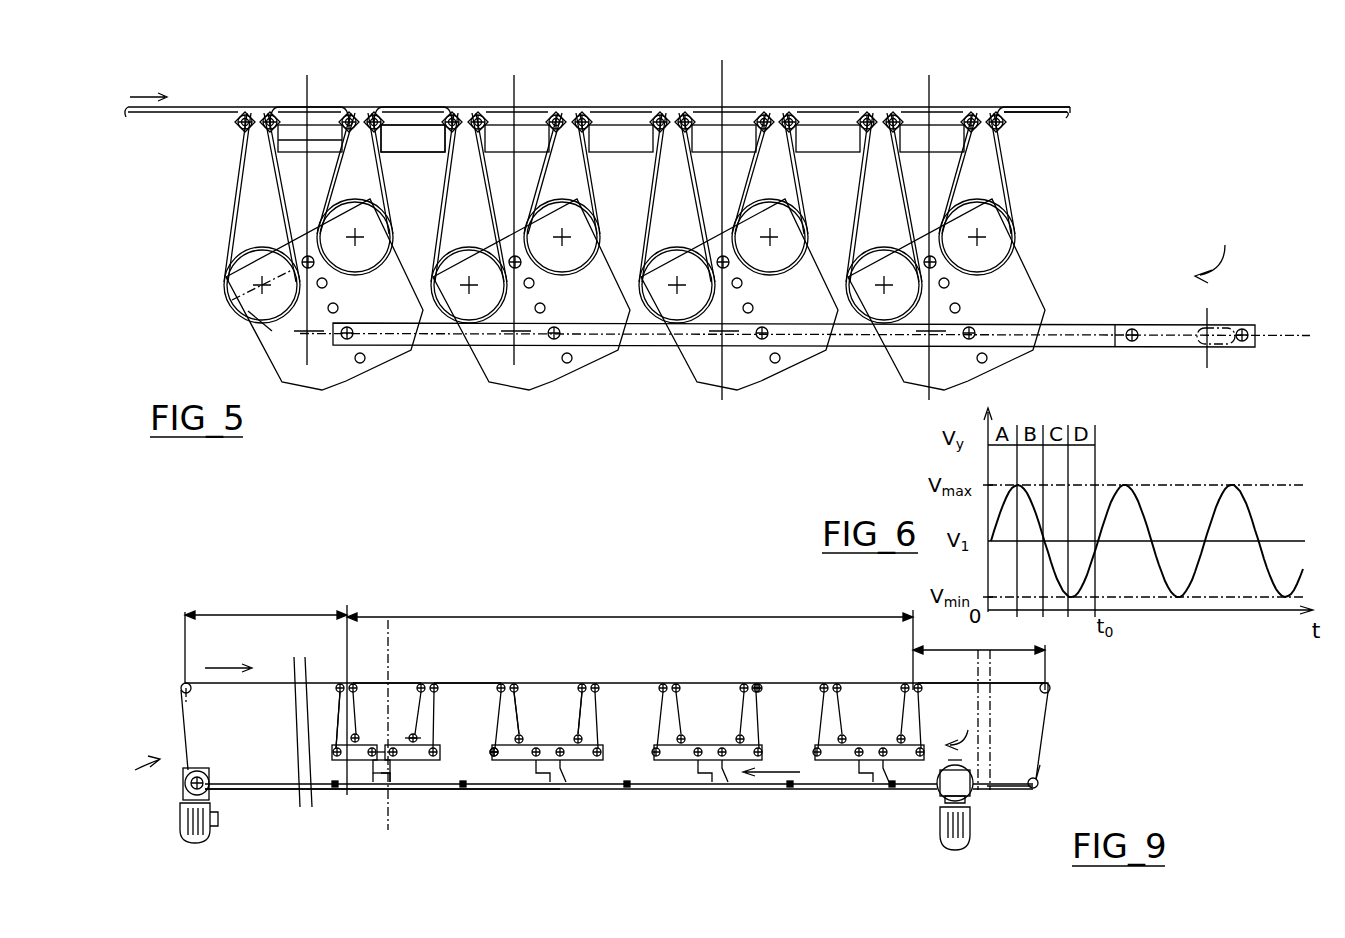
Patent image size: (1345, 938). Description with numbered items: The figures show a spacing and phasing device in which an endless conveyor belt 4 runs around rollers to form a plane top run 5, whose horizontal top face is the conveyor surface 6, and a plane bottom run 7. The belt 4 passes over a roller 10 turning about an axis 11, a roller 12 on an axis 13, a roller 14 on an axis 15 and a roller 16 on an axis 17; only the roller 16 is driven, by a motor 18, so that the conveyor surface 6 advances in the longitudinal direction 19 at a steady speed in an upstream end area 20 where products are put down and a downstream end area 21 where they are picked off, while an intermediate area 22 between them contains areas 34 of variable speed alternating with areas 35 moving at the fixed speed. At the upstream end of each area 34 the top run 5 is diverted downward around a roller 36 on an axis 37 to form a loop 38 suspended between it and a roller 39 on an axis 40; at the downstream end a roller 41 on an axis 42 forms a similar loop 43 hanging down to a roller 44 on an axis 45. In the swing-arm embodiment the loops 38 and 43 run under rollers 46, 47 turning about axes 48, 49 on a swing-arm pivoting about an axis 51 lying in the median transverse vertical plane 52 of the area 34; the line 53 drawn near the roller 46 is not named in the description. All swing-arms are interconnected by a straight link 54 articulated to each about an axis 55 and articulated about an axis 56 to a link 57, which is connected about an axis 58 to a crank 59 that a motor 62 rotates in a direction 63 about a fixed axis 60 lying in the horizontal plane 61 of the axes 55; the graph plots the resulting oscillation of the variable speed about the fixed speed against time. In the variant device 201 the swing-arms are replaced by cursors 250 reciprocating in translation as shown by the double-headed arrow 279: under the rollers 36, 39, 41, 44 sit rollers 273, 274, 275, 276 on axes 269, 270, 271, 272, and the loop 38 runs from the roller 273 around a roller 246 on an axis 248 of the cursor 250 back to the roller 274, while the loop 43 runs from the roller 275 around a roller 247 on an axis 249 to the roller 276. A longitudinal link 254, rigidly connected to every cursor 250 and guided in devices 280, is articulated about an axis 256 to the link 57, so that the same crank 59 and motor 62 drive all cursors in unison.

In FIG. 9, the endless conveyor belt 4 is at (182, 720).
In FIG. 5, the top run 5 is at (1067, 116).
In FIG. 9, the top run 5 is at (1042, 715).
In FIG. 5, the conveyor surface 6 is at (1062, 106).
In FIG. 9, the conveyor surface 6 is at (1005, 682).
In FIG. 9, the bottom run 7 is at (654, 790).
In FIG. 9, the roller 10 is at (183, 684).
In FIG. 9, the axis 11 is at (192, 690).
In FIG. 9, the roller 12 is at (1052, 692).
In FIG. 9, the axis 13 is at (1055, 686).
In FIG. 9, the roller 14 is at (1040, 765).
In FIG. 9, the axis 15 is at (1040, 782).
In FIG. 9, the roller 16 is at (198, 768).
In FIG. 9, the axis 17 is at (208, 778).
In FIG. 9, the motor 18 is at (213, 828).
In FIG. 5, the direction 19 is at (138, 92).
In FIG. 9, the direction 19 is at (228, 666).
In FIG. 5, the upstream end area 20 is at (222, 106).
In FIG. 9, the upstream end area 20 is at (266, 601).
In FIG. 5, the downstream end area 21 is at (1040, 107).
In FIG. 9, the downstream end area 21 is at (979, 639).
In FIG. 9, the intermediate area 22 is at (630, 604).
In FIG. 5, the area 34 is at (318, 108).
In FIG. 9, the area 34 is at (398, 682).
In FIG. 5, the area 35 is at (415, 106).
In FIG. 9, the area 35 is at (480, 682).
In FIG. 5, the roller 36 is at (240, 122).
In FIG. 9, the roller 36 is at (343, 700).
In FIG. 5, the axis 37 is at (248, 127).
In FIG. 9, the axis 37 is at (338, 682).
In FIG. 5, the loop 38 is at (236, 210).
In FIG. 9, the loop 38 is at (332, 740).
In FIG. 5, the roller 39 is at (292, 152).
In FIG. 9, the roller 39 is at (370, 720).
In FIG. 5, the axis 40 is at (250, 115).
In FIG. 9, the axis 40 is at (354, 682).
In FIG. 5, the roller 41 is at (328, 152).
In FIG. 9, the roller 41 is at (410, 735).
In FIG. 5, the axis 42 is at (360, 118).
In FIG. 9, the axis 42 is at (436, 682).
In FIG. 5, the loop 43 is at (385, 175).
In FIG. 9, the loop 43 is at (433, 733).
In FIG. 5, the roller 44 is at (385, 137).
In FIG. 9, the roller 44 is at (438, 690).
In FIG. 5, the axis 45 is at (378, 118).
In FIG. 9, the axis 45 is at (440, 686).
In FIG. 5, the roller 46 is at (230, 258).
In FIG. 5, the roller 47 is at (392, 238).
In FIG. 5, the axis 48 is at (255, 328).
In FIG. 5, the axis 49 is at (368, 265).
In FIG. 5, the axis 51 is at (305, 257).
In FIG. 5, the median transverse vertical plane 52 is at (305, 100).
In FIG. 9, the median transverse vertical plane 52 is at (390, 620).
In FIG. 5, the pulley axis line 53 is at (222, 282).
In FIG. 5, the link 54 is at (868, 347).
In FIG. 5, the axis 55 is at (347, 341).
In FIG. 5, the axis 56 is at (1130, 328).
In FIG. 5, the link 57 is at (1150, 325).
In FIG. 9, the link 57 is at (948, 765).
In FIG. 5, the axis 58 is at (1245, 328).
In FIG. 9, the axis 58 is at (978, 770).
In FIG. 5, the crank 59 is at (1232, 346).
In FIG. 9, the crank 59 is at (980, 780).
In FIG. 5, the axis 60 is at (1198, 346).
In FIG. 9, the axis 60 is at (992, 797).
In FIG. 5, the horizontal plane 61 is at (1300, 336).
In FIG. 9, the horizontal plane 61 is at (1028, 788).
In FIG. 9, the motor 62 is at (970, 845).
In FIG. 5, the direction 63 is at (1218, 251).
In FIG. 9, the direction 63 is at (964, 728).
In FIG. 9, the device 201 is at (131, 772).
In FIG. 9, the roller 246 is at (372, 778).
In FIG. 9, the roller 247 is at (392, 777).
In FIG. 9, the axis 248 is at (342, 762).
In FIG. 9, the axis 249 is at (398, 765).
In FIG. 9, the cursor 250 is at (381, 775).
In FIG. 9, the longitudinal link 254 is at (560, 792).
In FIG. 9, the axis 256 is at (945, 800).
In FIG. 9, the axis 269 is at (307, 808).
In FIG. 9, the axis 270 is at (357, 738).
In FIG. 9, the axis 271 is at (413, 740).
In FIG. 9, the axis 272 is at (442, 760).
In FIG. 9, the roller 273 is at (333, 757).
In FIG. 9, the roller 274 is at (333, 745).
In FIG. 9, the roller 275 is at (441, 752).
In FIG. 9, the roller 276 is at (496, 758).
In FIG. 9, the double-headed arrow 279 is at (765, 790).
In FIG. 9, the guide devices 280 is at (464, 789).